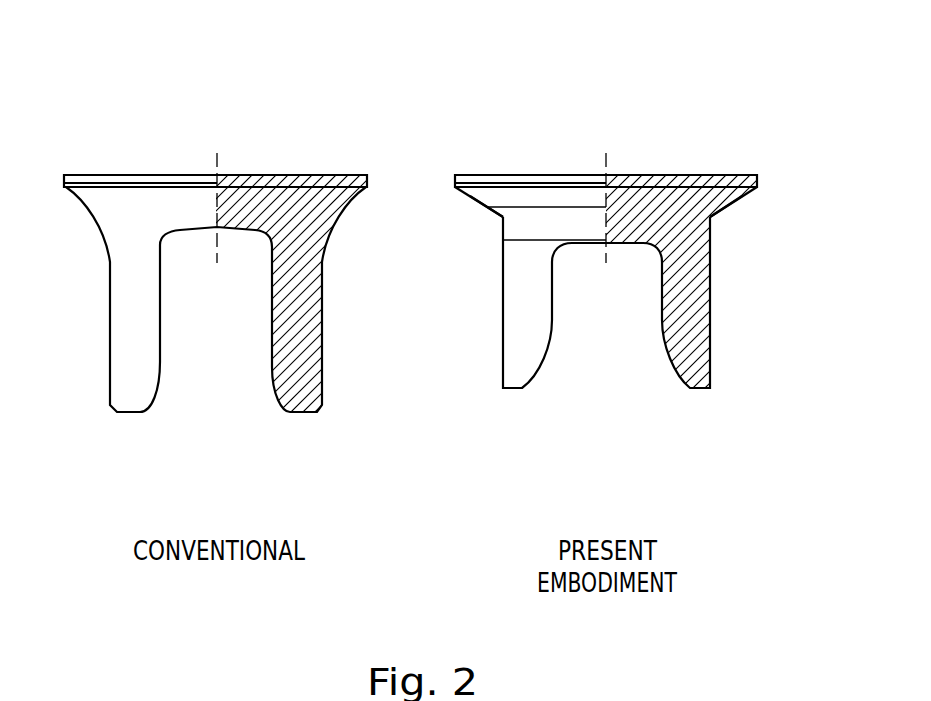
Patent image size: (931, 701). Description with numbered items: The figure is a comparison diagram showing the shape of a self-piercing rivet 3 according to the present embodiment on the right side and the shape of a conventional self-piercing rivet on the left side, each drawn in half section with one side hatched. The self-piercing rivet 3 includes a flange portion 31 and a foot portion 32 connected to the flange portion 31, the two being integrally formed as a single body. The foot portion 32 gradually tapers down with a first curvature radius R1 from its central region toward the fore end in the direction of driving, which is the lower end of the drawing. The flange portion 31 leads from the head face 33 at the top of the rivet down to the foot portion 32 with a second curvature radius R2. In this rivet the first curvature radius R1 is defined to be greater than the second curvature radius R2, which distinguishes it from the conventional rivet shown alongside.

The self-piercing rivet 3 is at (697, 101).
The flange portion 31 is at (706, 184).
The foot portion 32 is at (518, 343).
The head face 33 is at (518, 173).
The first curvature radius R1 is at (542, 360).
The second curvature radius R2 is at (477, 205).